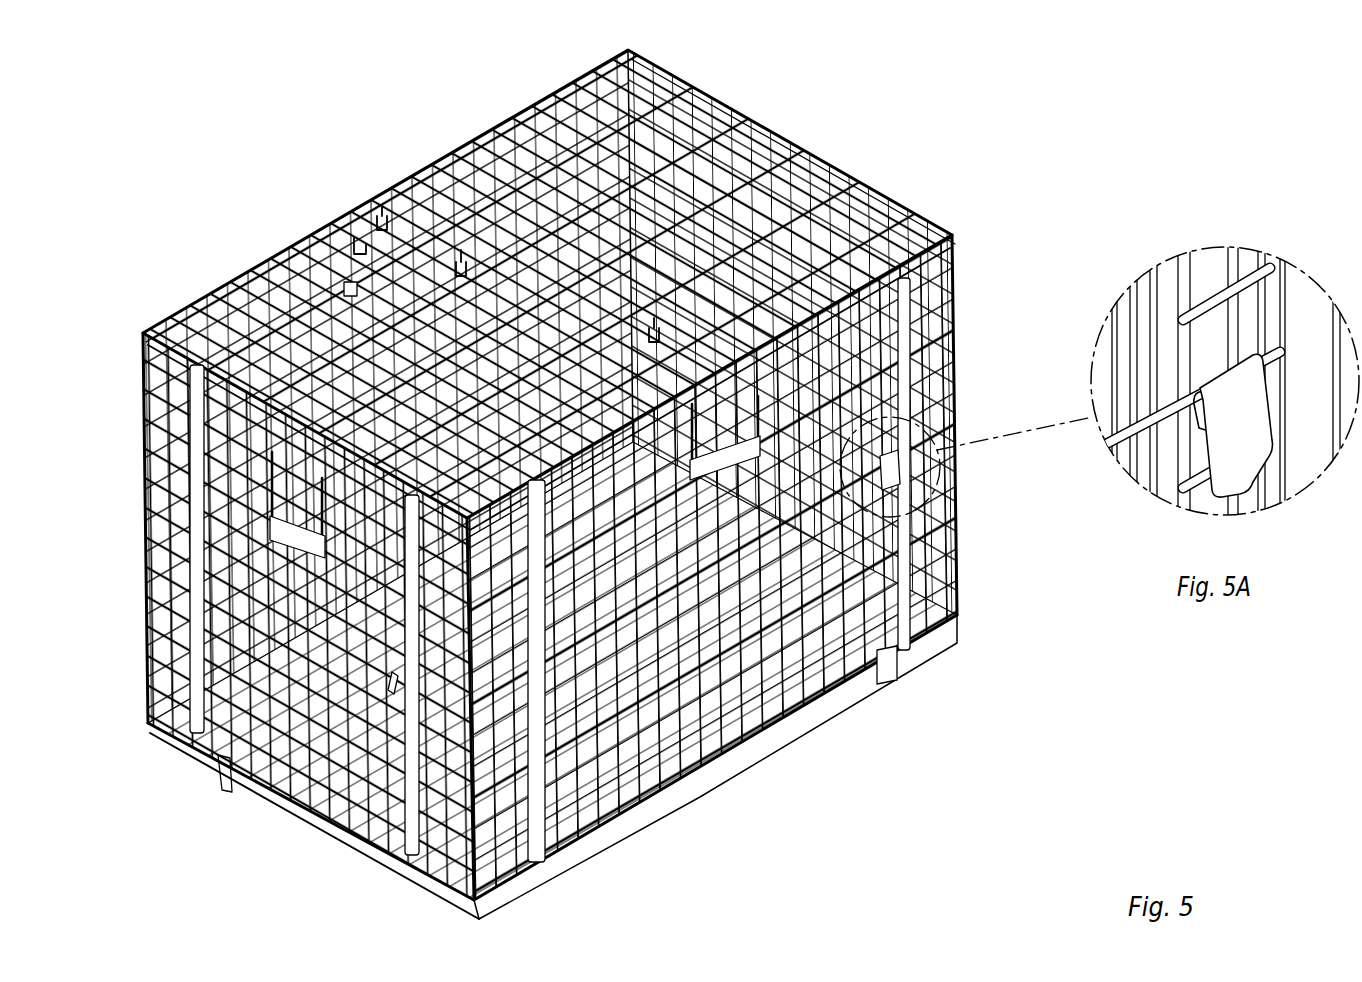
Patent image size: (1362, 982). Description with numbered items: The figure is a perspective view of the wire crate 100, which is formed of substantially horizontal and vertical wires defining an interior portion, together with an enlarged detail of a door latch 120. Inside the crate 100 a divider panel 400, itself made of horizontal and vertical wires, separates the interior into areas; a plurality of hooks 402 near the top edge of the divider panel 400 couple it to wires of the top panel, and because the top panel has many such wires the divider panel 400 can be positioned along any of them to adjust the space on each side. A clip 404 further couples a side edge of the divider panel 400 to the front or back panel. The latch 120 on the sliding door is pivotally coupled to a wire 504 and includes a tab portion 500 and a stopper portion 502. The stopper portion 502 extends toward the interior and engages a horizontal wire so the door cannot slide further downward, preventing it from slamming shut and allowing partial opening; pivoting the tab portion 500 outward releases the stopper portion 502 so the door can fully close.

In FIG. 5, the crate 100 is at (262, 178).
In FIG. 5, the latch 120 is at (902, 478).
In FIG. 5, the divider panel 400 is at (358, 250).
In FIG. 5, the hooks 402 is at (461, 268).
In FIG. 5, the clip 404 is at (346, 288).
In FIG. 5A, the tab portion 500 is at (1237, 483).
In FIG. 5A, the stopper portion 502 is at (1173, 402).
In FIG. 5A, the wire 504 is at (1138, 438).